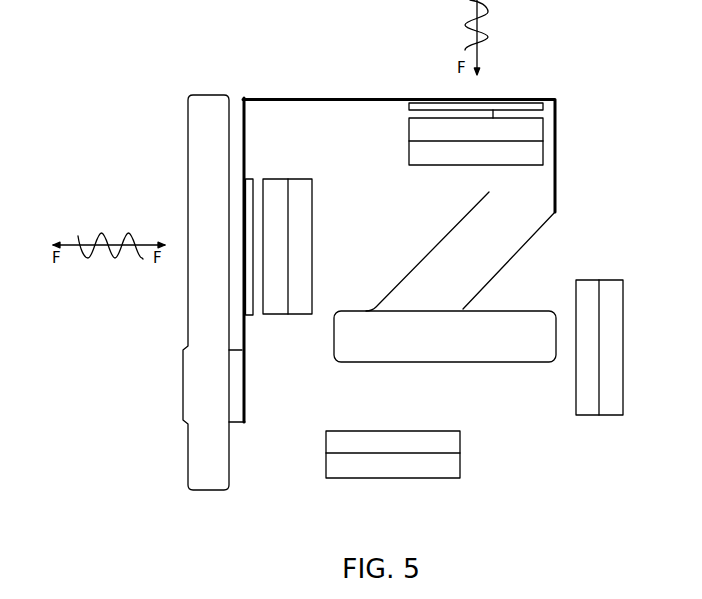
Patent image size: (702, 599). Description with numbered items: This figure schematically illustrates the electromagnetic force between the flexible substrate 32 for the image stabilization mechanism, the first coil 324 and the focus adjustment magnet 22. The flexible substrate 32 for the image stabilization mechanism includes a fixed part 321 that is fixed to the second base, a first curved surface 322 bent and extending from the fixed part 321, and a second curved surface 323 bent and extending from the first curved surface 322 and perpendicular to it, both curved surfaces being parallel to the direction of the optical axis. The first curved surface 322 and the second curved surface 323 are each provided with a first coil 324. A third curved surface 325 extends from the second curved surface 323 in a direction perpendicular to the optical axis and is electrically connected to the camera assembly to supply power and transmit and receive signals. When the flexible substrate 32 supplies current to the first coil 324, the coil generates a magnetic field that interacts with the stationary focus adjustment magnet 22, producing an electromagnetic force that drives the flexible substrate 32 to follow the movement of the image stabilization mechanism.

The focus adjustment magnet 22 is at (510, 141).
The flexible substrate for the image stabilization mechanism 32 is at (123, 42).
The fixed part 321 is at (210, 190).
The first curved surface 322 is at (243, 149).
The second curved surface 323 is at (280, 98).
The first coil 324 is at (458, 105).
The third curved surface 325 is at (438, 278).